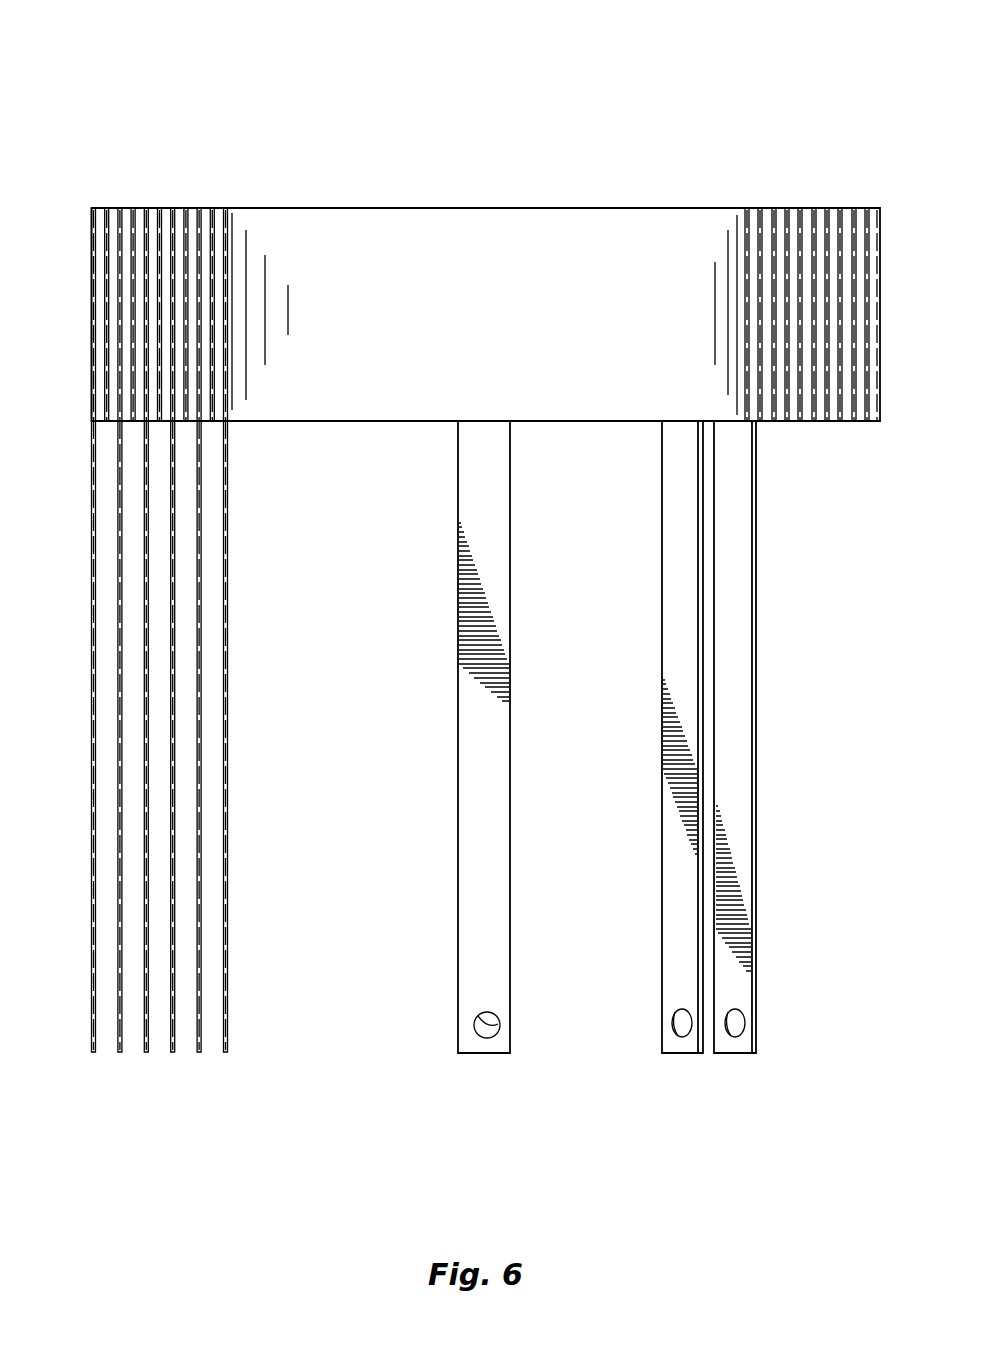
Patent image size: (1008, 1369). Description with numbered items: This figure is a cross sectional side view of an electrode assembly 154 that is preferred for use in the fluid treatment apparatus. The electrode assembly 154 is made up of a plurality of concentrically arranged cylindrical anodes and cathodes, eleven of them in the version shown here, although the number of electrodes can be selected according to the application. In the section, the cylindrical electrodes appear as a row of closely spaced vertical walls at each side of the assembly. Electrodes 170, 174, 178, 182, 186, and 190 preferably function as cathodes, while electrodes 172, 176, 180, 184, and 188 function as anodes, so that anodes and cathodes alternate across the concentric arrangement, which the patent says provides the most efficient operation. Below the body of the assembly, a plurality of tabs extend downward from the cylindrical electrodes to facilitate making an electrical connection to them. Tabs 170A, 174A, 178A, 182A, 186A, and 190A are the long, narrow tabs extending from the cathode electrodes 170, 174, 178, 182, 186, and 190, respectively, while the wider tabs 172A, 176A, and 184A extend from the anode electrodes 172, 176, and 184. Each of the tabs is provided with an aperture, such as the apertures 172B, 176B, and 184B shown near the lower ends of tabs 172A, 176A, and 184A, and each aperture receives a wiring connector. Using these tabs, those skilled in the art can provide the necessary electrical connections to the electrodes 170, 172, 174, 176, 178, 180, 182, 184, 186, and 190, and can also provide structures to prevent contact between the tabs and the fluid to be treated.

The electrode assembly 154 is at (738, 180).
The electrode 170 is at (223, 208).
The electrode 172 is at (210, 208).
The electrode 174 is at (197, 208).
The electrode 176 is at (183, 208).
The electrode 178 is at (170, 208).
The electrode 180 is at (157, 208).
The electrode 182 is at (144, 208).
The electrode 184 is at (131, 208).
The electrode 186 is at (118, 208).
The electrode 188 is at (105, 208).
The electrode 190 is at (92, 208).
The tab 170A is at (227, 1008).
The tab 174A is at (200, 1052).
The tab 178A is at (173, 1052).
The tab 182A is at (147, 1052).
The tab 186A is at (121, 1052).
The tab 190A is at (94, 1052).
The tab 172A is at (475, 1053).
The aperture 172B is at (495, 1022).
The tab 176A is at (680, 1053).
The aperture 176B is at (674, 1028).
The tab 184A is at (735, 1053).
The aperture 184B is at (745, 1025).